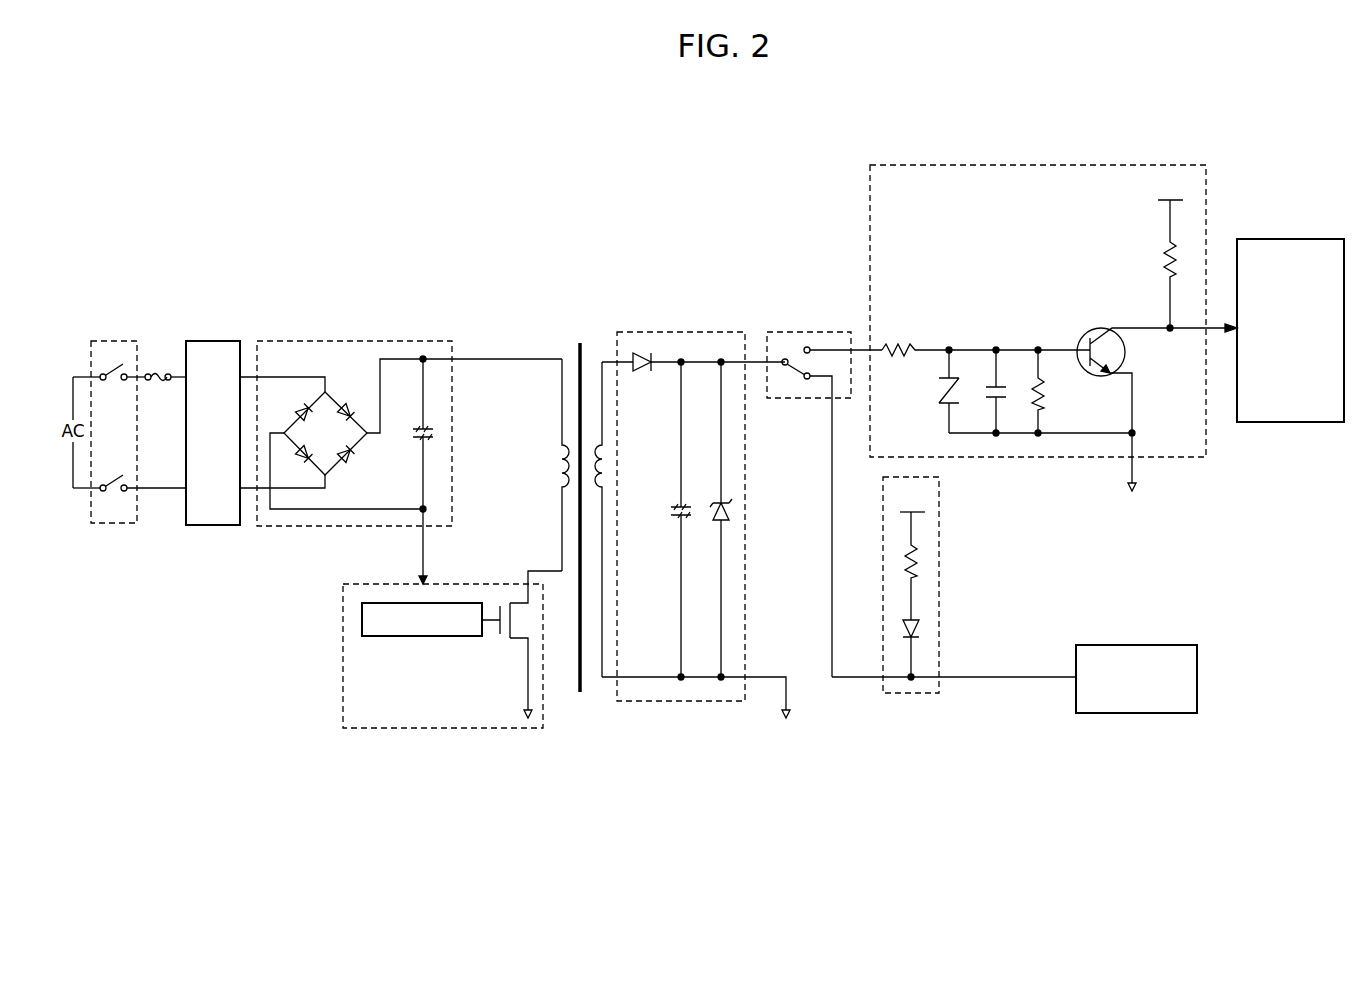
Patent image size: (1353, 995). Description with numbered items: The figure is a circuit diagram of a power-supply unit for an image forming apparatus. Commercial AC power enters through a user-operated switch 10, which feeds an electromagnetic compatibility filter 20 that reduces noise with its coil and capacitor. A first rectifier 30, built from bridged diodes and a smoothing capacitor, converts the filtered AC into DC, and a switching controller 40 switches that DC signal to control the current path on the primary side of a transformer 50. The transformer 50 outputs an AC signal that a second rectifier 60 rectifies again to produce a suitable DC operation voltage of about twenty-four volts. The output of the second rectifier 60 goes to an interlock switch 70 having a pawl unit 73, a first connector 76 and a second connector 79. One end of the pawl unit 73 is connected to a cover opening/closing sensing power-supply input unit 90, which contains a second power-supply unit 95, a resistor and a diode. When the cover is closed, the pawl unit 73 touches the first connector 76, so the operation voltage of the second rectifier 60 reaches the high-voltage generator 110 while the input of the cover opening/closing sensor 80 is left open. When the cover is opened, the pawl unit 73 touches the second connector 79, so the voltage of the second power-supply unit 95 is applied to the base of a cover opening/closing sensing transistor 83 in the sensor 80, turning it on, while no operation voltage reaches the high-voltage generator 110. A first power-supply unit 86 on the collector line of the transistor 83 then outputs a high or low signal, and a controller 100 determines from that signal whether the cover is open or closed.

The switch 10 is at (118, 341).
The electromagnetic compatibility (EMC) filter 20 is at (213, 341).
The first rectifier 30 is at (352, 341).
The switching controller 40 is at (343, 655).
The transformer 50 is at (579, 343).
The second rectifier 60 is at (680, 332).
The interlock switch 70 is at (820, 482).
The pawl unit 73 is at (808, 380).
The first connector 76 is at (785, 366).
The second connector 79 is at (810, 347).
The cover opening/closing sensor 80 is at (1053, 307).
The cover opening/closing sensing transistor 83 is at (1103, 328).
The first power-supply unit 86 is at (1171, 175).
The cover opening/closing sensing power-supply input unit 90 is at (954, 585).
The second power-supply unit 95 is at (929, 498).
The controller 100 is at (1308, 239).
The high-voltage generator (HVPS) 110 is at (1137, 645).